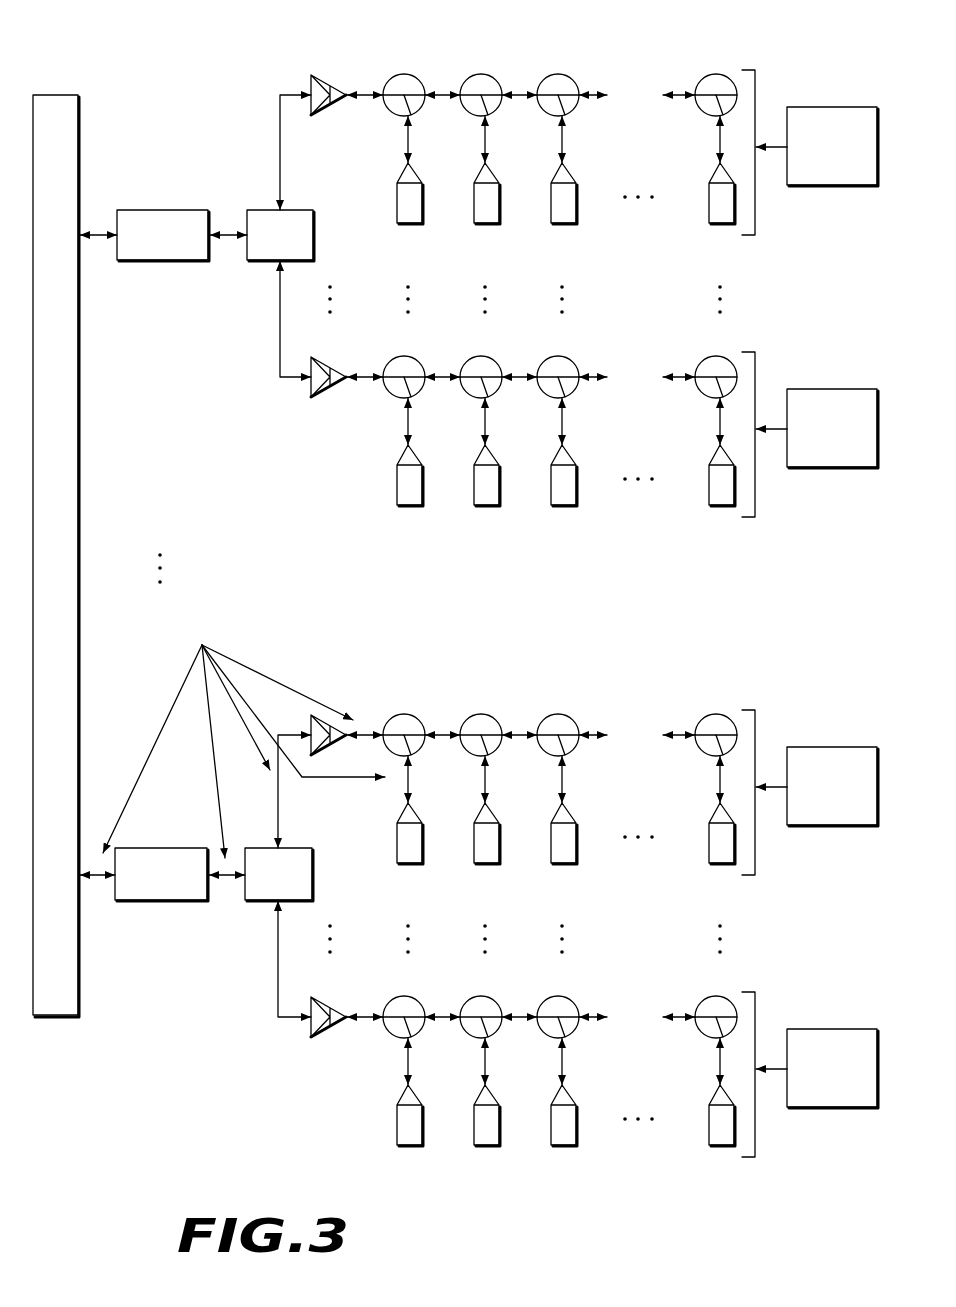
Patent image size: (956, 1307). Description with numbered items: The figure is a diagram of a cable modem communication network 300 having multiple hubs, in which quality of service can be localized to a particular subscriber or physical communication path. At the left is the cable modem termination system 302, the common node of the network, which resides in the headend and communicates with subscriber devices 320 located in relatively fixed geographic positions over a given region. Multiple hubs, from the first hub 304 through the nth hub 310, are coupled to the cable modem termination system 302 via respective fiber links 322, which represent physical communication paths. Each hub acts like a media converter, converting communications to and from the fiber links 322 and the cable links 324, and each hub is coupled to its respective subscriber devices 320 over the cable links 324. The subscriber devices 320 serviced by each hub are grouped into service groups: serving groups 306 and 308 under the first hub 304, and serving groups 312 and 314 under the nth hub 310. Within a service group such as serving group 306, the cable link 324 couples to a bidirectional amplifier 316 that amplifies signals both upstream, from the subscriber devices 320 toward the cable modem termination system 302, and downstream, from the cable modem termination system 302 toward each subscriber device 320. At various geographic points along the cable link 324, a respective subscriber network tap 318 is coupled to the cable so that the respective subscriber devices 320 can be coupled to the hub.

The communication network 300 is at (168, 42).
The cable modem termination system 302 is at (80, 143).
The hub 1 304 is at (267, 208).
The serving group 306 is at (827, 107).
The serving group 308 is at (827, 389).
The hub n 310 is at (260, 902).
The serving group 312 is at (827, 747).
The serving group 314 is at (827, 1029).
The bidirectional amplifier 316 is at (323, 75).
The subscriber network tap 318 is at (713, 74).
The subscriber device 320 is at (714, 226).
The fiber link 322 is at (168, 208).
The cable link 324 is at (278, 138).